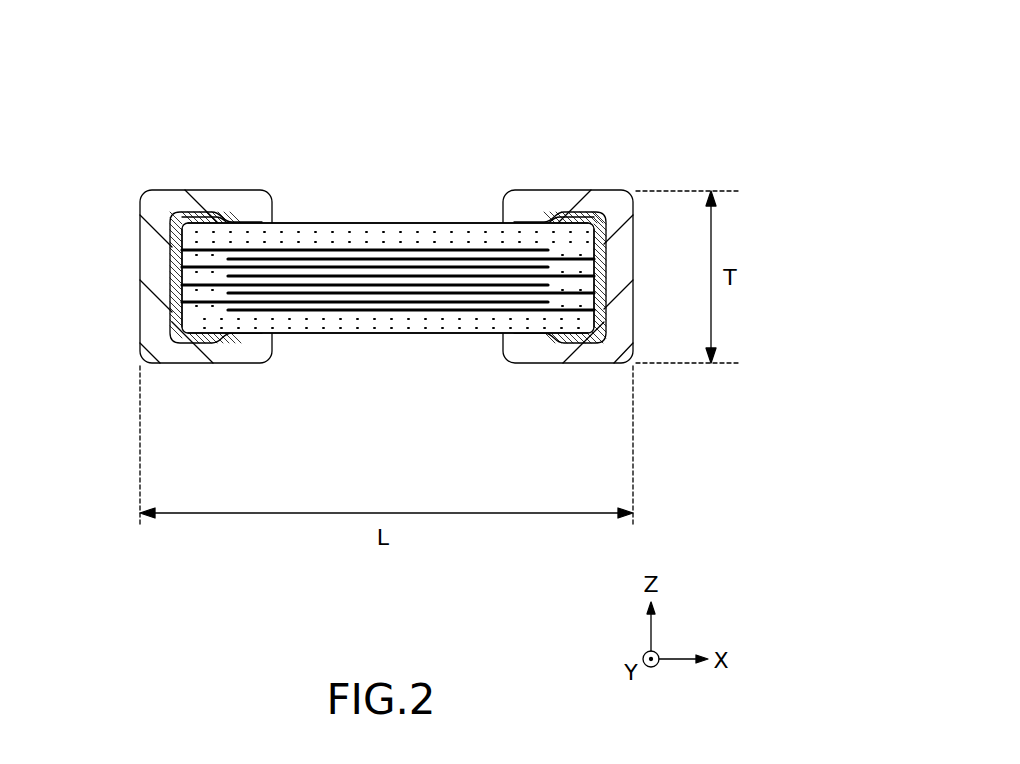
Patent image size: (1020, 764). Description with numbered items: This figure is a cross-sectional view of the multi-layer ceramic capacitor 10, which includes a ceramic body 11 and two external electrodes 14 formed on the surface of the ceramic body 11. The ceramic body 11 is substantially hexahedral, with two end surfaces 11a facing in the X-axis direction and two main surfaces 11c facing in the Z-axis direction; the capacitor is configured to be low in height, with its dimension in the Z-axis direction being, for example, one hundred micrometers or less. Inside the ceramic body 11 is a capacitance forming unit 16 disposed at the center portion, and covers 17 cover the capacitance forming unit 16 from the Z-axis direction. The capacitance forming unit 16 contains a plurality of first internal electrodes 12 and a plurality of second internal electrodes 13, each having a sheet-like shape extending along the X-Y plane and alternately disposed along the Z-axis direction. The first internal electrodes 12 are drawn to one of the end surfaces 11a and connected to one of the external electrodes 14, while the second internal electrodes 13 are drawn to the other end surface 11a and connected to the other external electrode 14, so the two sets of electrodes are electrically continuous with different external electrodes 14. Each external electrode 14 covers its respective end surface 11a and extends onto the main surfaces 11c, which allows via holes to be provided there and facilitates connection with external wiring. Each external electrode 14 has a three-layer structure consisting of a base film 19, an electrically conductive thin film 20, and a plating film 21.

The multi-layer ceramic capacitor 10 is at (612, 80).
The ceramic body 11 is at (363, 274).
The end surface 11a is at (213, 395).
The main surface 11c is at (480, 222).
The first internal electrode 12 is at (318, 302).
The second internal electrode 13 is at (405, 223).
The external electrode 14 is at (341, 298).
The capacitance forming unit 16 is at (388, 225).
The cover 17 is at (450, 222).
The base film 19 is at (175, 225).
The electrically conductive thin film 20 is at (235, 220).
The plating film 21 is at (155, 278).